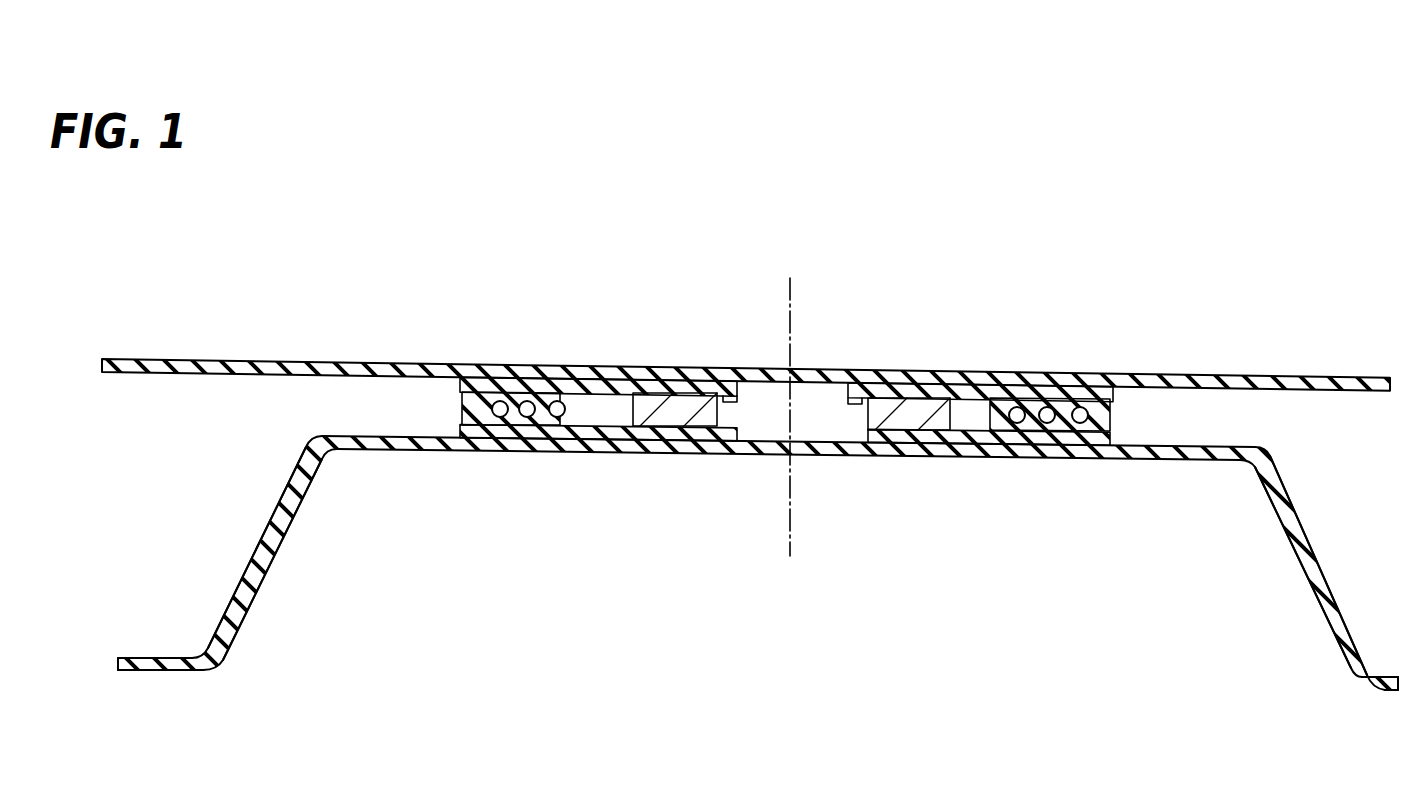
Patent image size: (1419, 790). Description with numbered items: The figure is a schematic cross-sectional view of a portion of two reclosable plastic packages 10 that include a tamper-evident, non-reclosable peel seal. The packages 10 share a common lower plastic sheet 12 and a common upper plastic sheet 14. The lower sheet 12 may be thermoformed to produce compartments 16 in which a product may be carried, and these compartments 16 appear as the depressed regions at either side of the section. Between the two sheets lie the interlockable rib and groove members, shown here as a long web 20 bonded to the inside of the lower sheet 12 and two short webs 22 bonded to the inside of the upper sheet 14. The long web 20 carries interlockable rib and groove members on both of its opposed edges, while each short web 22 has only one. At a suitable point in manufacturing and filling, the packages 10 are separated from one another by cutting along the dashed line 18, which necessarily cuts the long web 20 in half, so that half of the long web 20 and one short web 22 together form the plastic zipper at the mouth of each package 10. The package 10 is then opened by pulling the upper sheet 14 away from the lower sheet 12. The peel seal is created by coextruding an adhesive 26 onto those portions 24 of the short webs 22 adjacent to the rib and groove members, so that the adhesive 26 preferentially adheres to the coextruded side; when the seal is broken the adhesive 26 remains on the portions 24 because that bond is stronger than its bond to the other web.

The package 10 is at (343, 340).
The lower plastic sheet 12 is at (263, 538).
The upper plastic sheet 14 is at (580, 366).
The compartment 16 is at (172, 598).
The dashed line 18 is at (793, 300).
The long web 20 is at (740, 441).
The short web 22 is at (514, 392).
The portion of short web 24 is at (658, 393).
The adhesive 26 is at (668, 426).